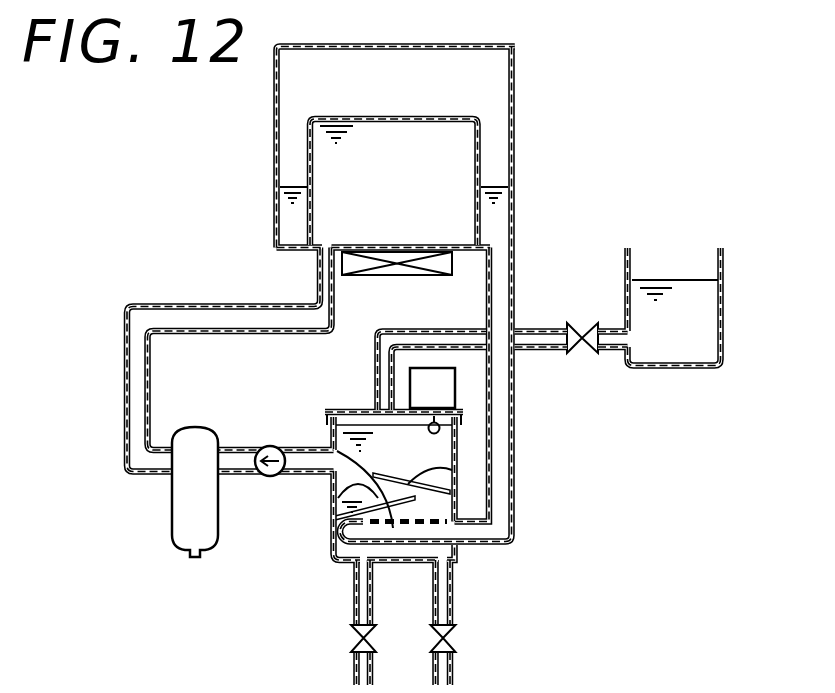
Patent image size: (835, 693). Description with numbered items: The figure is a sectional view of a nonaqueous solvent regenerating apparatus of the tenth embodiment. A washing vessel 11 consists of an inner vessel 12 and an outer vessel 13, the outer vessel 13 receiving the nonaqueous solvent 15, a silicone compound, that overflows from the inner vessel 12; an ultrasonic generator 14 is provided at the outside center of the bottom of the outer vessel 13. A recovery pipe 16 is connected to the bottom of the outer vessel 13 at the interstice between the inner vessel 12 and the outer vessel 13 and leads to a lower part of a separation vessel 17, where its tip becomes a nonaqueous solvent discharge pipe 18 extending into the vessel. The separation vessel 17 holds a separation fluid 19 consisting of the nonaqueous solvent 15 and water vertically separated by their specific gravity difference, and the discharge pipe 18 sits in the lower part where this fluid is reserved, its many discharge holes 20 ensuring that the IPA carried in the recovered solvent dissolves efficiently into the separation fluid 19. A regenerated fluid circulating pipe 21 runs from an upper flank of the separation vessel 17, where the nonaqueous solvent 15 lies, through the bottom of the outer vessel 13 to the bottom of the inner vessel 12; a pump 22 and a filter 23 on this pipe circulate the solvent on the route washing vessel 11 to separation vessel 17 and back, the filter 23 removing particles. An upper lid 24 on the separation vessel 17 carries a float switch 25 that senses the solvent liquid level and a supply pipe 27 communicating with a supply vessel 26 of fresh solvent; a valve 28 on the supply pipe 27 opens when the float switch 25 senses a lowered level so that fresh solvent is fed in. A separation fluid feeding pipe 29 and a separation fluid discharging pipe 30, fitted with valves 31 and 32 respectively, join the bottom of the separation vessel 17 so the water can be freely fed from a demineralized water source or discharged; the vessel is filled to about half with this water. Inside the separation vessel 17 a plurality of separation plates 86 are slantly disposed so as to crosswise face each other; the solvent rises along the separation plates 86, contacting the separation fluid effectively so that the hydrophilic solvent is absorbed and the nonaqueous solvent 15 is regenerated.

The washing vessel 11 is at (523, 75).
The inner vessel 12 is at (480, 150).
The outer vessel 13 is at (516, 205).
The ultrasonic generator 14 is at (352, 263).
The nonaqueous solvent 15 is at (347, 158).
The recovery pipe 16 is at (515, 284).
The separation vessel 17 is at (336, 516).
The nonaqueous solvent discharge pipe 18 is at (489, 548).
The separation fluid 19 is at (442, 505).
The discharge holes 20 is at (328, 443).
The regenerated fluid circulating pipe 21 is at (123, 355).
The pump 22 is at (272, 448).
The filter 23 is at (180, 509).
The upper lid 24 is at (345, 405).
The float switch 25 is at (443, 387).
The supply vessel 26 is at (724, 278).
The supply pipe 27 is at (387, 328).
The valve 28 is at (578, 323).
The separation fluid feeding pipe 29 is at (453, 600).
The separation fluid discharging pipe 30 is at (353, 605).
The valve 31 is at (452, 645).
The valve 32 is at (350, 645).
The separation plates 86 is at (334, 485).